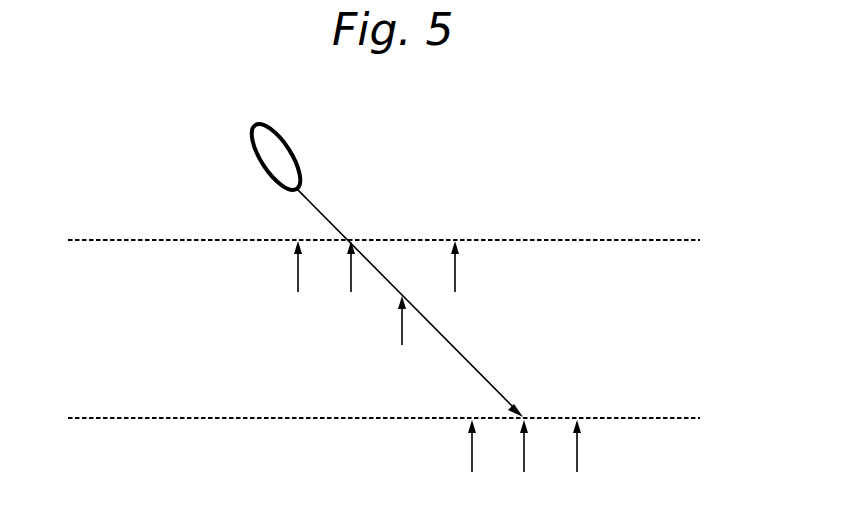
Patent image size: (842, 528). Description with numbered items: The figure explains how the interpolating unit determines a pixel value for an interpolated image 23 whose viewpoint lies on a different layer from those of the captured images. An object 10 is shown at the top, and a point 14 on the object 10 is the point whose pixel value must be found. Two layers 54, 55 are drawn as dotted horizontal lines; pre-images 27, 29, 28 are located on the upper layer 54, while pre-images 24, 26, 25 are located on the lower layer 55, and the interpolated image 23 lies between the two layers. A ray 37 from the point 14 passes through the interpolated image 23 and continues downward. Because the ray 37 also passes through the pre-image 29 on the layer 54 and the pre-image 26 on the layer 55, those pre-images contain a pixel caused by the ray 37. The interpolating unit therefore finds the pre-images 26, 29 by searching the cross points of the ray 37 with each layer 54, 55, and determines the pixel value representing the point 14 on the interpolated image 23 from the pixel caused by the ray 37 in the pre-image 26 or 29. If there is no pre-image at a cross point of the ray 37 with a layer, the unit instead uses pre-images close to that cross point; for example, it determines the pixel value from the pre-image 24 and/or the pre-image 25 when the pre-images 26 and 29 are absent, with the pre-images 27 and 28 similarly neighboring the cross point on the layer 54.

The object 10 is at (277, 128).
The point on the object 14 is at (302, 187).
The ray 37 is at (477, 366).
The layer 54 is at (675, 238).
The layer 55 is at (675, 416).
The pre-image 27 is at (298, 292).
The pre-image 29 is at (351, 292).
The pre-image 28 is at (455, 292).
The interpolated image 23 is at (402, 345).
The pre-image 24 is at (472, 472).
The pre-image 26 is at (524, 472).
The pre-image 25 is at (577, 472).